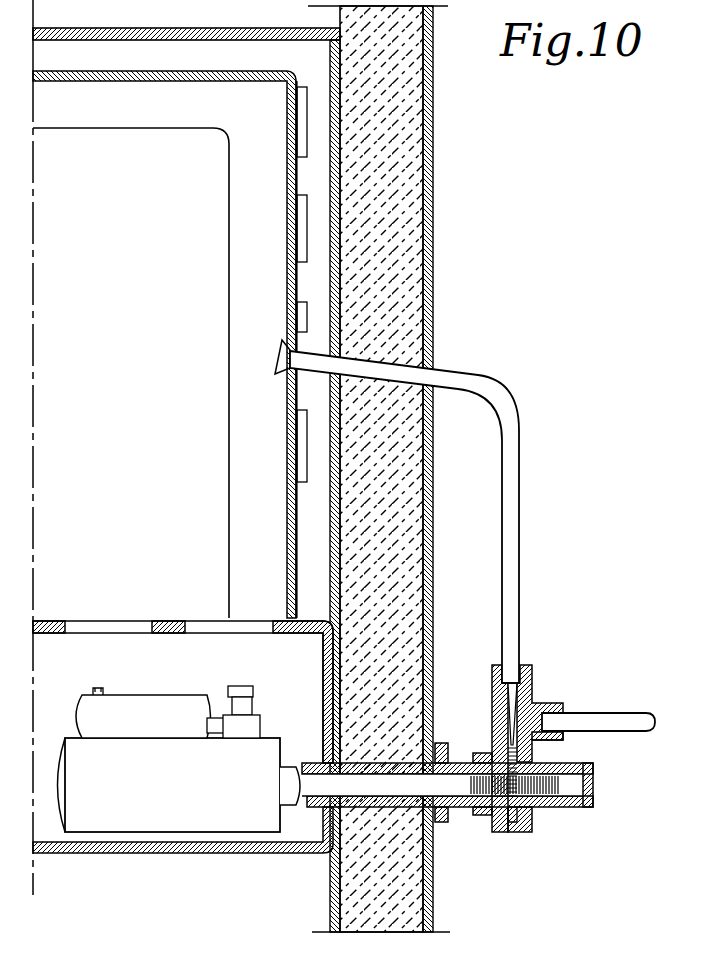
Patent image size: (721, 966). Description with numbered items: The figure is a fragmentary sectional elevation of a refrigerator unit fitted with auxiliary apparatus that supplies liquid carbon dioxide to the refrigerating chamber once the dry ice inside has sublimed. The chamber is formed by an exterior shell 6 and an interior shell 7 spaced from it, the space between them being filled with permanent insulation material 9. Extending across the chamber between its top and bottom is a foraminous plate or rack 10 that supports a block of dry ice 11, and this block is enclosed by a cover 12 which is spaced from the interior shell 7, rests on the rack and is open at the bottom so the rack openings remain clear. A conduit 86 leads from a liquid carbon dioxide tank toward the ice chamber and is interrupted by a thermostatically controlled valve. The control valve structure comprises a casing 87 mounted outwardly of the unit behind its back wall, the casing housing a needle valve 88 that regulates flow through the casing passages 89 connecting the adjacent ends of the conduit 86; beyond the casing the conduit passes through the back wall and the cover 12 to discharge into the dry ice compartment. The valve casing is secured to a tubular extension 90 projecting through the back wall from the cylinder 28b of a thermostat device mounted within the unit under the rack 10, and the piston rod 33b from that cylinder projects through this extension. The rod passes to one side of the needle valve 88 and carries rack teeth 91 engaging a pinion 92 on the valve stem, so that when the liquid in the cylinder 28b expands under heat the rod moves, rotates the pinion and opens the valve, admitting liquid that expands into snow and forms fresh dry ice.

The exterior shell 6 is at (437, 505).
The interior shell 7 is at (330, 398).
The permanent insulation material 9 is at (433, 282).
The foraminous plate or rack 10 is at (168, 620).
The block of dry ice 11 is at (211, 160).
The cover 12 is at (288, 518).
The cylinder 28b is at (250, 765).
The piston rod 33b is at (427, 782).
The conduit 86 is at (513, 537).
The casing 87 is at (492, 700).
The needle valve 88 is at (563, 737).
The casing passages 89 is at (535, 707).
The tubular extension 90 is at (315, 855).
The rack teeth 91 is at (587, 803).
The pinion 92 is at (537, 803).